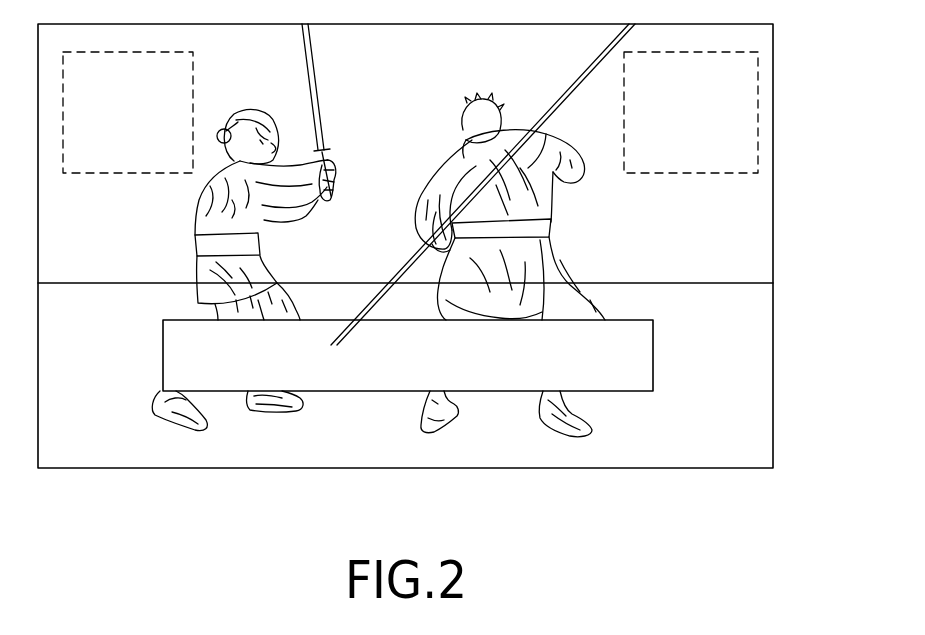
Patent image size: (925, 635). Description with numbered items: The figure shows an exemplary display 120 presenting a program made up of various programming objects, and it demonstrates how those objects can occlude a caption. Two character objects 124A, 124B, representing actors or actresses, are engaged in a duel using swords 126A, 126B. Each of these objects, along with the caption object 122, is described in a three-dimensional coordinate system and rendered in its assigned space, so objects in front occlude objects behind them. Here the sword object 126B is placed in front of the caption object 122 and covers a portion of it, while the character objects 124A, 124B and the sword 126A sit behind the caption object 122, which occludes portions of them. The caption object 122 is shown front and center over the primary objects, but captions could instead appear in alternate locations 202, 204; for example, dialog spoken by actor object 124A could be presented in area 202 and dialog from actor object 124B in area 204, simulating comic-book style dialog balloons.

The display 120 is at (773, 197).
The caption object 122 is at (655, 365).
The character object 124A is at (195, 272).
The character object 124B is at (445, 172).
The sword 126A is at (322, 80).
The sword 126B is at (408, 258).
The location 202 is at (101, 165).
The location 204 is at (687, 167).